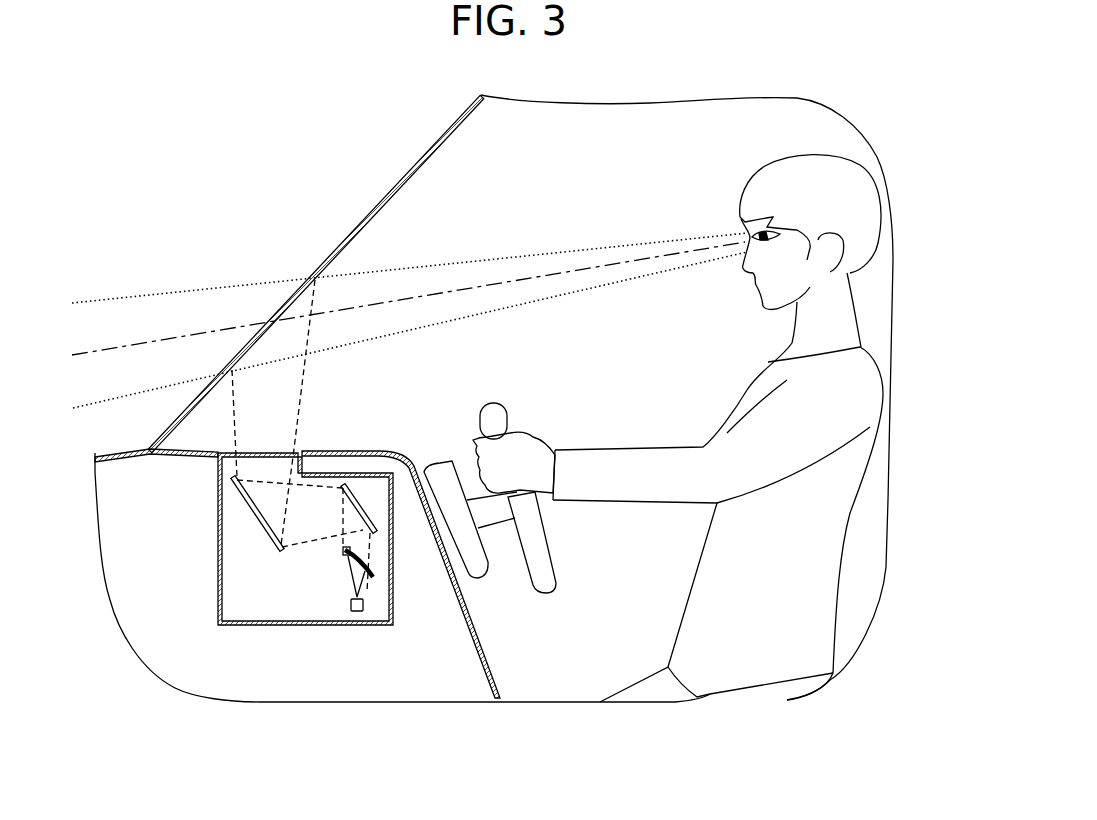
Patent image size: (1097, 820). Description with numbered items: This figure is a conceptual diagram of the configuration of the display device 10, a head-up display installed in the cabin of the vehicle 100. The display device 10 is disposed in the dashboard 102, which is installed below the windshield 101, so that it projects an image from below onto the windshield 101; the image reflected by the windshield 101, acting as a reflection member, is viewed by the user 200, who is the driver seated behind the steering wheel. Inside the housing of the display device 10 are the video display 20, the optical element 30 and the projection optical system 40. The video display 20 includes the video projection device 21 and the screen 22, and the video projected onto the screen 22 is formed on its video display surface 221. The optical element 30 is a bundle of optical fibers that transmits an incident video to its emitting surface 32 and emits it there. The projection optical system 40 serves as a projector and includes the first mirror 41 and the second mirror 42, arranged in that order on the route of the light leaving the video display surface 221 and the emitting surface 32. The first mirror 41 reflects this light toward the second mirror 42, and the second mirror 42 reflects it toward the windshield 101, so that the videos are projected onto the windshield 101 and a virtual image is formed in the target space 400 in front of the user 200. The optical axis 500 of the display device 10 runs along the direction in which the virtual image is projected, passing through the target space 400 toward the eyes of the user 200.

The display device 10 is at (237, 627).
The video display 20 is at (402, 584).
The video projection device 21 is at (367, 607).
The screen 22 is at (391, 564).
The video display surface 221 is at (363, 557).
The optical element 30 is at (343, 562).
The emitting surface 32 is at (342, 548).
The projection optical system 40 is at (262, 518).
The first mirror 41 is at (352, 507).
The second mirror 42 is at (240, 495).
The vehicle 100 is at (137, 451).
The windshield 101 is at (403, 180).
The dashboard 102 is at (380, 451).
The user 200 is at (770, 178).
The target space 400 is at (167, 293).
The optical axis 500 is at (118, 347).